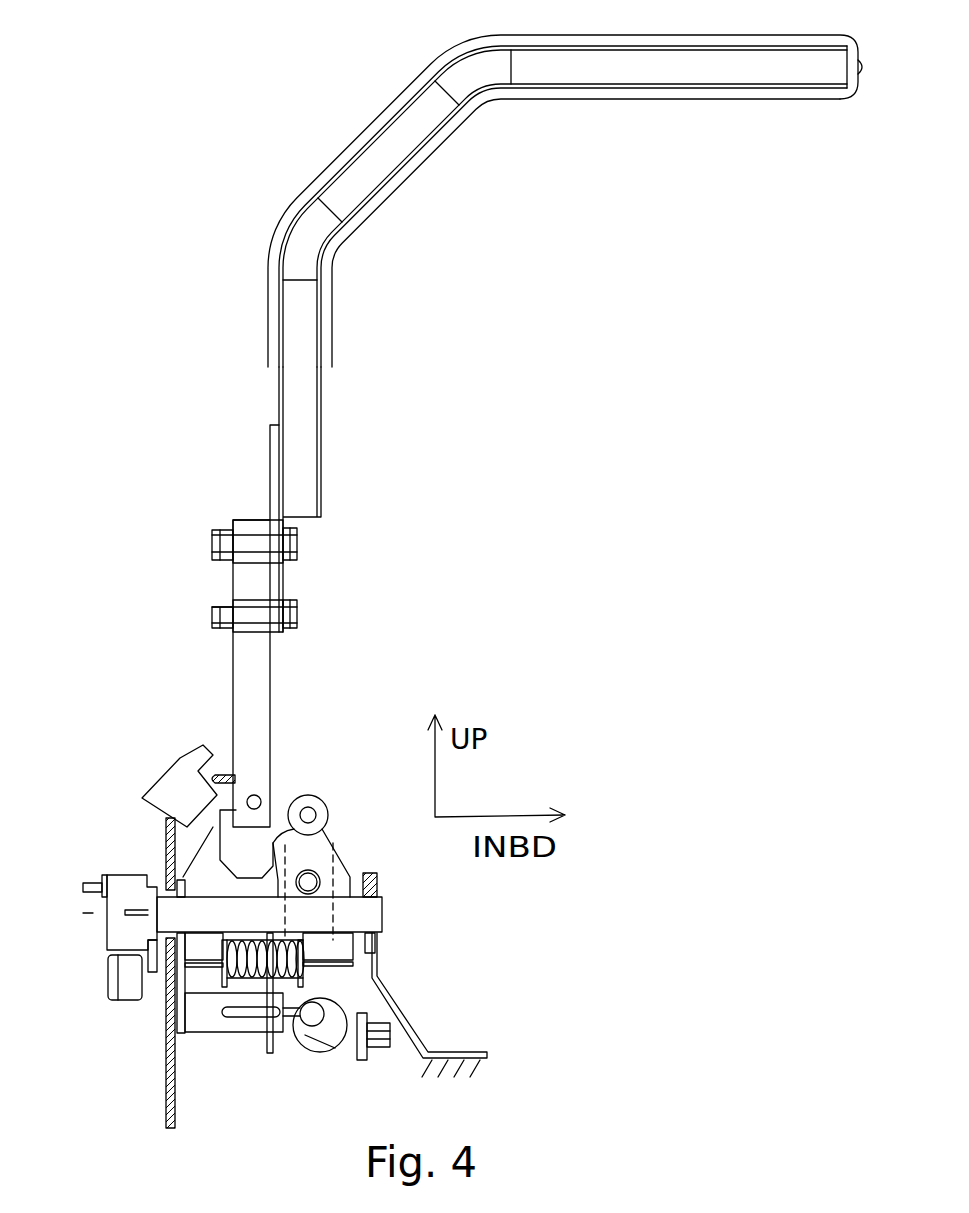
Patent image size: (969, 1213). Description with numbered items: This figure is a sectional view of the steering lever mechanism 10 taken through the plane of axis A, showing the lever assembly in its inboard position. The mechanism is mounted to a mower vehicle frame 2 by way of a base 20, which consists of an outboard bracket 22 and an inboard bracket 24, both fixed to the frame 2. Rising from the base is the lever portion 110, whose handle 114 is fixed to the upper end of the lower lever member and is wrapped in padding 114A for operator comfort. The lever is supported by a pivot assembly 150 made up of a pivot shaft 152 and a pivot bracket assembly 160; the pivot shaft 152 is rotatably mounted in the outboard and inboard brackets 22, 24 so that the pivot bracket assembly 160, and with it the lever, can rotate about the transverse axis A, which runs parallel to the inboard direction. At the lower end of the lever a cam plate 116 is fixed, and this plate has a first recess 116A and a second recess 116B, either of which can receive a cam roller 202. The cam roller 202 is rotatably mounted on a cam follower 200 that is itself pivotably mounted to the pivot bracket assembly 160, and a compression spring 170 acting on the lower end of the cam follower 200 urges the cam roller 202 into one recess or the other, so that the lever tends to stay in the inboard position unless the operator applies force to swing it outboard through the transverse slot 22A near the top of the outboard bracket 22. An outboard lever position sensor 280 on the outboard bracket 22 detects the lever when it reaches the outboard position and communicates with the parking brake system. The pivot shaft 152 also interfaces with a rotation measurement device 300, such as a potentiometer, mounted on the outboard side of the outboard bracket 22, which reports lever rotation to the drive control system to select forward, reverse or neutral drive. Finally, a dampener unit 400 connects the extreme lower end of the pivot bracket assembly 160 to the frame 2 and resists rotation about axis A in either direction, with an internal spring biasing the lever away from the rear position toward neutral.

The steering lever mechanism 10 is at (304, 106).
The padding 114A is at (398, 187).
The handle 114 is at (323, 430).
The lever portion 110 is at (323, 604).
The cam plate 116 is at (290, 778).
The first recess 116A is at (297, 812).
The cam roller 202 is at (318, 800).
The second recess 116B is at (337, 843).
The cam follower 200 is at (330, 850).
The transverse slot 22A is at (222, 773).
The outboard lever position sensor 280 is at (170, 767).
The pivot bracket assembly 160 is at (212, 878).
The pivot assembly 150 is at (372, 849).
The pivot shaft 152 is at (421, 910).
The axis A is at (617, 911).
The rotation measurement device 300 is at (108, 947).
The outboard bracket 22 is at (165, 1047).
The mower vehicle frame 2 is at (183, 1077).
The base 20 is at (412, 970).
The compression spring 170 is at (247, 977).
The dampener unit 400 is at (345, 1040).
The inboard bracket 24 is at (413, 1023).